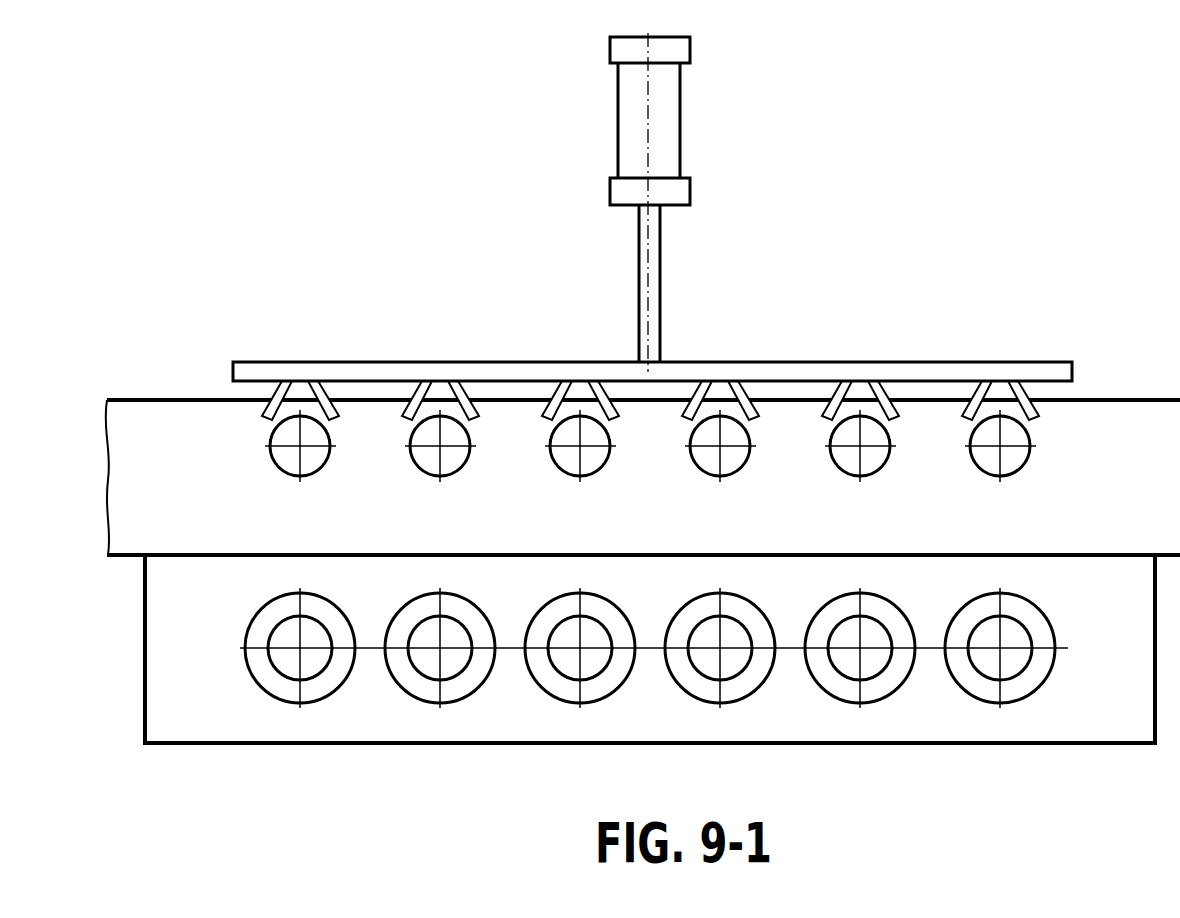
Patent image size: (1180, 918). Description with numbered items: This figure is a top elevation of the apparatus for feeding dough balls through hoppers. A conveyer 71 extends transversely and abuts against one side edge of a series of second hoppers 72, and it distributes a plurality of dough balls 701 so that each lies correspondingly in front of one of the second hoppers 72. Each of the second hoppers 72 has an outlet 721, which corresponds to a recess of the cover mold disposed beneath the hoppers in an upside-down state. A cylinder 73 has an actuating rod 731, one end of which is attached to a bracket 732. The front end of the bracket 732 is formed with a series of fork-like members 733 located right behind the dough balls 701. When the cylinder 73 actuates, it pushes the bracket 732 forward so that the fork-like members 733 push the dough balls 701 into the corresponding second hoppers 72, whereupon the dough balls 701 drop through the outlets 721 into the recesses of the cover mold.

The conveyer 71 is at (1093, 415).
The second hoppers 72 is at (300, 717).
The outlets 721 is at (587, 668).
The dough ball 701 is at (430, 433).
The fork-like members 733 is at (562, 395).
The bracket 732 is at (998, 373).
The actuating rod 731 is at (655, 342).
The cylinder 73 is at (668, 167).